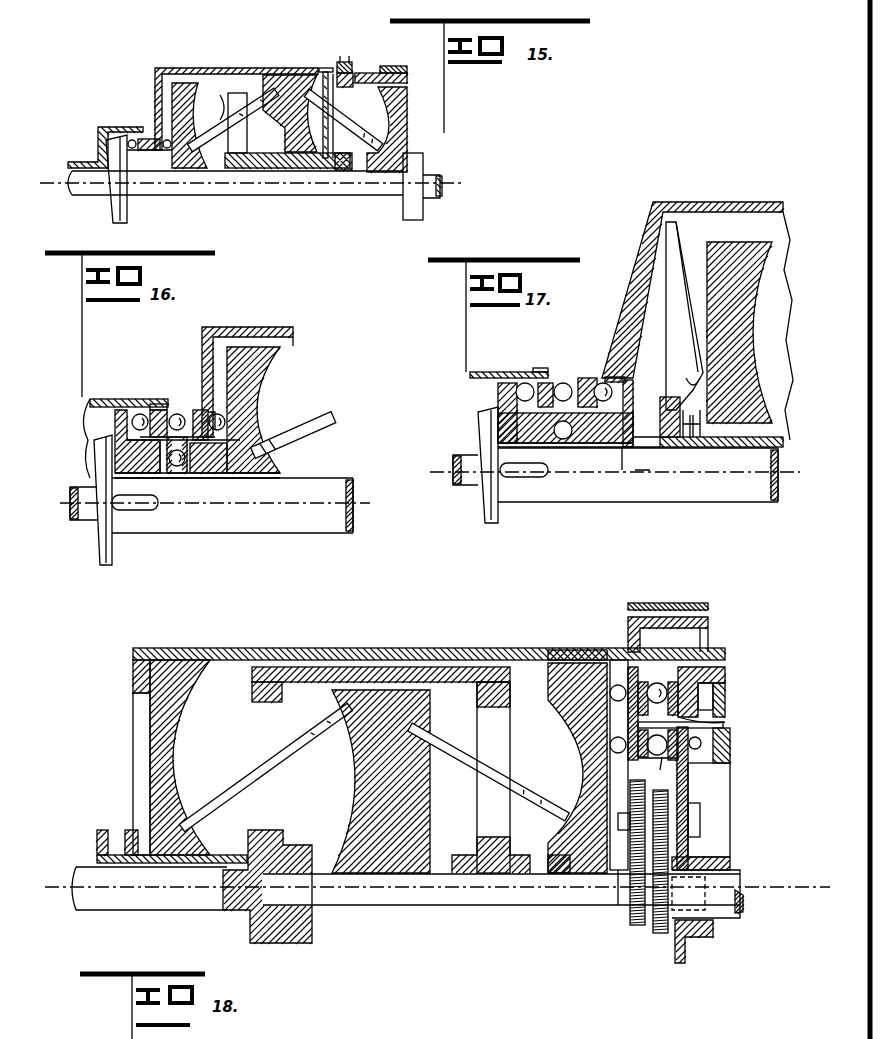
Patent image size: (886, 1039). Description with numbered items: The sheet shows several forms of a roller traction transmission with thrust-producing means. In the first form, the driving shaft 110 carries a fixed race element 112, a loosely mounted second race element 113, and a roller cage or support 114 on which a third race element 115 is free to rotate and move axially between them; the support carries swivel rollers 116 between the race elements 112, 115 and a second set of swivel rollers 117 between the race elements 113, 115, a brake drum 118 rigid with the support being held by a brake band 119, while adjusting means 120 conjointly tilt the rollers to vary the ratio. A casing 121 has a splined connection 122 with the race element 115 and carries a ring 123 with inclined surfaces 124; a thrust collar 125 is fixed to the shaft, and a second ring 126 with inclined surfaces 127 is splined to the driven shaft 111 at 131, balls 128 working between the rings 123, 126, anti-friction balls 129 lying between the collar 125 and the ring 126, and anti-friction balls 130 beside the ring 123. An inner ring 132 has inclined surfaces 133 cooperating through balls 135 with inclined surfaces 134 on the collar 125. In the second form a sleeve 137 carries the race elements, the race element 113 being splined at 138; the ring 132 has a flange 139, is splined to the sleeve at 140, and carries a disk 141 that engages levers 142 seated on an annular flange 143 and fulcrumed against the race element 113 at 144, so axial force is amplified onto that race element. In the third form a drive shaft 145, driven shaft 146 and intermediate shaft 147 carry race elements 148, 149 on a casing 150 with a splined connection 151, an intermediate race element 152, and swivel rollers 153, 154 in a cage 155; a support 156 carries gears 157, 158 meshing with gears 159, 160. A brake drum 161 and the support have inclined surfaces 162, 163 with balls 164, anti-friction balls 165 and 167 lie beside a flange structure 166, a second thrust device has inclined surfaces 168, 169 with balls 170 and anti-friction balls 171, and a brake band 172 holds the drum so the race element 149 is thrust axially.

In FIG. 15, the driving shaft 110 is at (438, 178).
In FIG. 16, the driving shaft 110 is at (254, 525).
In FIG. 17, the driving shaft 110 is at (588, 495).
In FIG. 15, the driven shaft 111 is at (68, 166).
In FIG. 16, the driven shaft 111 is at (104, 399).
In FIG. 15, the race element 112 is at (400, 99).
In FIG. 15, the second race element 113 is at (185, 90).
In FIG. 16, the second race element 113 is at (275, 360).
In FIG. 17, the second race element 113 is at (770, 266).
In FIG. 15, the roller cage or support 114 is at (330, 170).
In FIG. 15, the third race element 115 is at (277, 76).
In FIG. 15, the swivel rollers 116 is at (342, 118).
In FIG. 15, the second set of swivel rollers 117 is at (233, 114).
In FIG. 15, the brake drum 118 is at (365, 73).
In FIG. 15, the brake band 119 is at (393, 66).
In FIG. 15, the adjusting means 120 is at (346, 63).
In FIG. 15, the casing 121 is at (157, 68).
In FIG. 16, the casing 121 is at (202, 338).
In FIG. 15, the splined connection 122 is at (322, 70).
In FIG. 16, the ring 123 is at (222, 418).
In FIG. 17, the ring 123 is at (598, 388).
In FIG. 16, the inclined surfaces 124 is at (205, 365).
In FIG. 16, the thrust collar 125 is at (120, 458).
In FIG. 16, the second ring 126 is at (137, 416).
In FIG. 16, the inclined surfaces 127 is at (195, 410).
In FIG. 16, the balls 128 is at (187, 409).
In FIG. 16, the anti-friction balls 129 is at (132, 422).
In FIG. 16, the anti-friction balls 130 is at (300, 428).
In FIG. 17, the anti-friction balls 130 is at (603, 380).
In FIG. 16, the splined connection 131 is at (163, 404).
In FIG. 17, the ring 132 is at (605, 437).
In FIG. 16, the inclined surfaces 133 is at (215, 473).
In FIG. 16, the inclined surfaces 134 is at (160, 474).
In FIG. 16, the balls 135 is at (177, 470).
In FIG. 17, the sleeve 137 is at (778, 437).
In FIG. 17, the splined connection 138 is at (690, 436).
In FIG. 17, the flange 139 is at (635, 412).
In FIG. 17, the splined connection 140 is at (639, 471).
In FIG. 17, the disk 141 is at (645, 296).
In FIG. 17, the levers 142 is at (682, 246).
In FIG. 17, the annular flange 143 is at (660, 440).
In FIG. 17, the fulcrum 144 is at (698, 371).
In FIG. 18, the drive shaft 145 is at (735, 908).
In FIG. 18, the driven shaft 146 is at (78, 902).
In FIG. 18, the intermediate shaft 147 is at (476, 900).
In FIG. 18, the race element 148 is at (155, 790).
In FIG. 18, the race element 149 is at (560, 690).
In FIG. 18, the casing 150 is at (243, 648).
In FIG. 18, the splined connection 151 is at (560, 650).
In FIG. 18, the intermediate race element 152 is at (395, 810).
In FIG. 18, the swivel rollers 153 is at (280, 775).
In FIG. 18, the swivel rollers 154 is at (480, 772).
In FIG. 18, the cage or support 155 is at (278, 667).
In FIG. 18, the support 156 is at (728, 855).
In FIG. 18, the gear 157 is at (690, 803).
In FIG. 18, the gear 158 is at (620, 860).
In FIG. 18, the gear 159 is at (658, 935).
In FIG. 18, the gear 160 is at (634, 922).
In FIG. 18, the brake drum 161 is at (628, 640).
In FIG. 18, the inclined surfaces 162 is at (612, 742).
In FIG. 18, the inclined surfaces 163 is at (725, 724).
In FIG. 18, the balls 164 is at (664, 772).
In FIG. 18, the anti-friction balls 165 is at (650, 740).
In FIG. 18, the flange structure 166 is at (722, 716).
In FIG. 18, the anti-friction balls 167 is at (731, 746).
In FIG. 18, the inclined surfaces 168 is at (726, 666).
In FIG. 18, the inclined surfaces 169 is at (658, 722).
In FIG. 18, the balls 170 is at (660, 680).
In FIG. 18, the anti-friction balls 171 is at (612, 692).
In FIG. 18, the brake band 172 is at (688, 602).